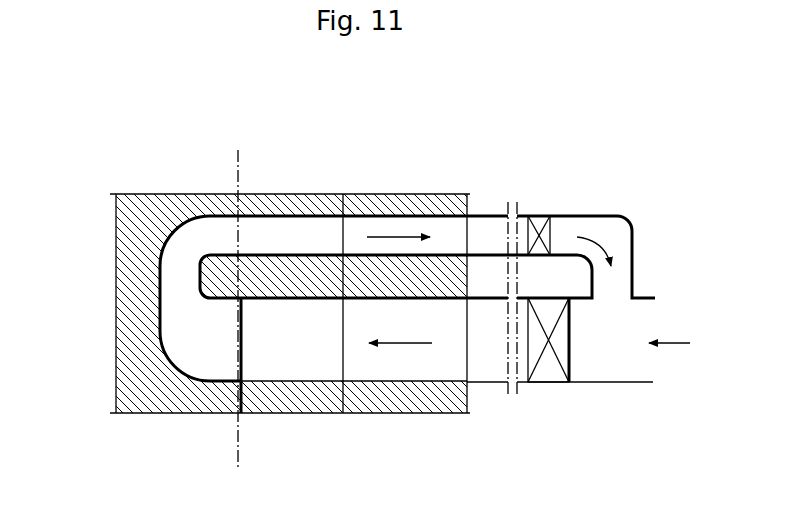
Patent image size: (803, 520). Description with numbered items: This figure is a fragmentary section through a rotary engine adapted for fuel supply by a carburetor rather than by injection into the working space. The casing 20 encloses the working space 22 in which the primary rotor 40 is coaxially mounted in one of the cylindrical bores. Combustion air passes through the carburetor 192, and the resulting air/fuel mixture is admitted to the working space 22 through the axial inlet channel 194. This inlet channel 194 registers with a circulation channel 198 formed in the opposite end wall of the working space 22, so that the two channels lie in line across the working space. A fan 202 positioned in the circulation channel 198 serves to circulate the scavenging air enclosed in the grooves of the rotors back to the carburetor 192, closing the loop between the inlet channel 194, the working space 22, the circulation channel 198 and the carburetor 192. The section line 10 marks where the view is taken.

The section line 10- 10 is at (238, 150).
The casing 20 is at (137, 317).
The working space 22 is at (259, 370).
The primary rotor 40 is at (318, 398).
The carburetor 192 is at (550, 370).
The axial inlet channel 194 is at (390, 368).
The circulation channel 198 is at (175, 261).
The fan 202 is at (539, 222).